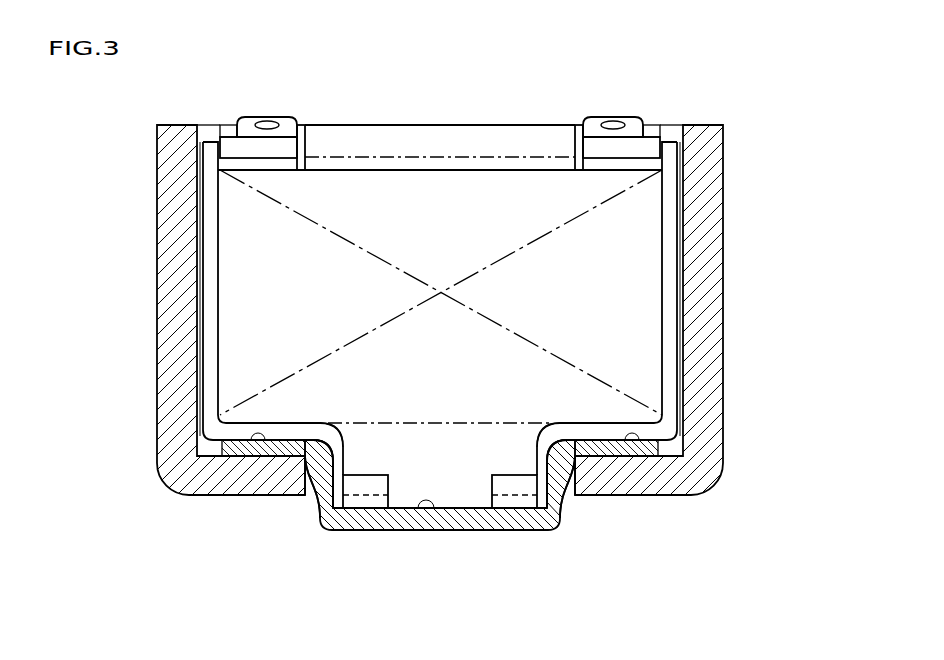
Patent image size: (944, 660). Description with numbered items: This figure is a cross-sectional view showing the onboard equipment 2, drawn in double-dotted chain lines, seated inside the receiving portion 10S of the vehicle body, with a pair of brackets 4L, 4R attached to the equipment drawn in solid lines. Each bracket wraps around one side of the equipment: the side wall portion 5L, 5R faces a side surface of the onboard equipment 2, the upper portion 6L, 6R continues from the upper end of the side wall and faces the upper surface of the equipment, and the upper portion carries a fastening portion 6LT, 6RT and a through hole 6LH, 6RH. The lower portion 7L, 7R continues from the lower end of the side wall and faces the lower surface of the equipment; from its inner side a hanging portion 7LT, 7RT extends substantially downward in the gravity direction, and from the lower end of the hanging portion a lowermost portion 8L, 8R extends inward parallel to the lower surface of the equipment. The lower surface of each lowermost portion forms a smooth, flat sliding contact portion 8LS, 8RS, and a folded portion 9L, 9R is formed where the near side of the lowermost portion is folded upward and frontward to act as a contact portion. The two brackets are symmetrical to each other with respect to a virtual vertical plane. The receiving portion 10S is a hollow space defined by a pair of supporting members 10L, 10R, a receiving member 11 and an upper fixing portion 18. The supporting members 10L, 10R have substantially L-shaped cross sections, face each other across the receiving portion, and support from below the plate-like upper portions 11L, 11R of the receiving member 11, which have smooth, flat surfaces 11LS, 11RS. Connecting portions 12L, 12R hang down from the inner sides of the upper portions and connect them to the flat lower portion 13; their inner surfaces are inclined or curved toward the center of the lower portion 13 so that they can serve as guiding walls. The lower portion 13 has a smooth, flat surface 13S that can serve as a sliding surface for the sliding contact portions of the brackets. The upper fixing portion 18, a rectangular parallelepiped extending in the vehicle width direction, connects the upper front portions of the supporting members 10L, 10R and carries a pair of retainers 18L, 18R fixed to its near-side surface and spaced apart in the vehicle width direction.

The onboard equipment 2 is at (440, 262).
The bracket 4L is at (192, 251).
The bracket 4R is at (688, 251).
The side wall portion 5L is at (197, 212).
The side wall portion 5R is at (683, 212).
The upper portion 6L is at (247, 150).
The upper portion 6R is at (633, 150).
The fastening portion 6LT is at (236, 128).
The fastening portion 6RT is at (644, 128).
The through hole 6LH is at (266, 121).
The through hole 6RH is at (614, 121).
The lower portion 7L is at (285, 428).
The lower portion 7R is at (595, 428).
The hanging portion 7LT is at (350, 468).
The hanging portion 7RT is at (530, 468).
The lowermost portion 8L is at (374, 488).
The lowermost portion 8R is at (508, 486).
The sliding contact portion 8LS is at (405, 508).
The sliding contact portion 8RS is at (470, 508).
The folded portion 9L is at (372, 452).
The folded portion 9R is at (508, 452).
The supporting member 10L is at (176, 300).
The supporting member 10R is at (705, 286).
The receiving portion 10S is at (600, 309).
The receiving member 11 is at (255, 596).
The upper portion 11L is at (278, 458).
The upper portion 11R is at (604, 458).
The surface 11LS is at (236, 497).
The surface 11RS is at (647, 497).
The connecting portion 12L is at (323, 492).
The connecting portion 12R is at (556, 492).
The lower portion 13 is at (440, 516).
The surface 13S is at (427, 507).
The upper fixing portion 18 is at (474, 152).
The retainer 18L is at (303, 158).
The retainer 18R is at (578, 158).